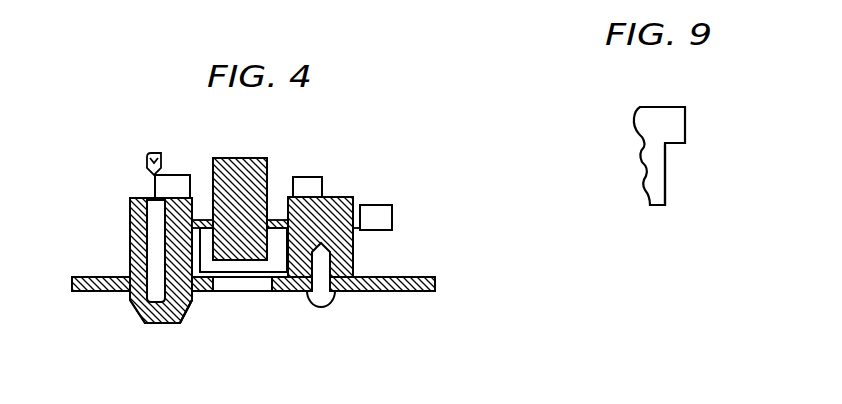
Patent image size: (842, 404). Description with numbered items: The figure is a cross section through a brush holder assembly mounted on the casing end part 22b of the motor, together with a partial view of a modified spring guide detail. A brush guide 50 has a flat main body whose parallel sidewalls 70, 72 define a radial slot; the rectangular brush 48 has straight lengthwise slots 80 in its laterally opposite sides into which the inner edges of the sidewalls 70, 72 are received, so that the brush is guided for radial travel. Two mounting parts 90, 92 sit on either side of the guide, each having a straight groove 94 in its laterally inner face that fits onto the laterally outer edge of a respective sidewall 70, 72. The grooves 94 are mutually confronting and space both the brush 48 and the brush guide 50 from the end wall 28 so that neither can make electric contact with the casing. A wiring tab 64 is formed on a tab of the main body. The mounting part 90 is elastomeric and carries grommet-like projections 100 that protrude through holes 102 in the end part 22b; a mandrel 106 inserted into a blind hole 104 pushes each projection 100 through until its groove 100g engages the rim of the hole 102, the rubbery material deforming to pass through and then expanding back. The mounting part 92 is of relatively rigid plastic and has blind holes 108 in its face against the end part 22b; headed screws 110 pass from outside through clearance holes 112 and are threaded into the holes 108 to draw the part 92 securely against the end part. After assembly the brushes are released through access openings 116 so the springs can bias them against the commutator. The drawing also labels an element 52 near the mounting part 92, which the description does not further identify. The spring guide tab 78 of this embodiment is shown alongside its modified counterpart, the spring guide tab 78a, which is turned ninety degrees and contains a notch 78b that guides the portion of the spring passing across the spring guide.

In FIG. 4, the casing end part 22b is at (269, 303).
In FIG. 4, the end wall 28 is at (88, 292).
In FIG. 4, the brush 48 is at (243, 165).
In FIG. 4, the brush guide 50 is at (273, 221).
In FIG. 4, the housing 52 is at (275, 249).
In FIG. 4, the wiring tab 64 is at (380, 205).
In FIG. 4, the sidewall 70 is at (203, 221).
In FIG. 4, the sidewall 72 is at (285, 221).
In FIG. 4, the spring guide tab 78 is at (177, 185).
In FIG. 9, the spring guide tab 78a is at (633, 113).
In FIG. 9, the notch 78b is at (655, 172).
In FIG. 4, the slot 80 is at (243, 264).
In FIG. 4, the mounting part 90 is at (137, 280).
In FIG. 4, the mounting part 92 is at (353, 238).
In FIG. 4, the groove 94 is at (203, 291).
In FIG. 4, the grommet-like projection 100 is at (153, 318).
In FIG. 4, the groove 100g is at (182, 323).
In FIG. 4, the hole 102 is at (122, 277).
In FIG. 4, the blind hole 104 is at (150, 227).
In FIG. 4, the mandrel 106 is at (150, 160).
In FIG. 4, the blind hole 108 is at (353, 258).
In FIG. 4, the headed screw 110 is at (349, 304).
In FIG. 4, the clearance hole 112 is at (343, 293).
In FIG. 4, the access opening 116 is at (228, 292).